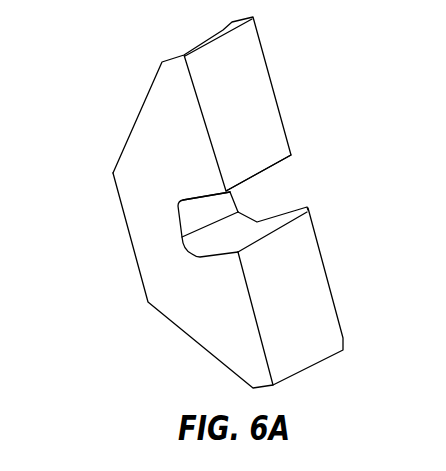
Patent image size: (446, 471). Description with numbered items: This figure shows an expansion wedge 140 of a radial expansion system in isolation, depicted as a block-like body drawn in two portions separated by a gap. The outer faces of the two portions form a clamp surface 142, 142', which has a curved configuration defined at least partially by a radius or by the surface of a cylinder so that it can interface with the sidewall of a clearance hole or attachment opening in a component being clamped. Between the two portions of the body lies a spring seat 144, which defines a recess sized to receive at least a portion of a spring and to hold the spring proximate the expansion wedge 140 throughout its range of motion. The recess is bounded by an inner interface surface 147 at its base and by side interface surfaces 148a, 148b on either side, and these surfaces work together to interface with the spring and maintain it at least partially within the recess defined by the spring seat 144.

The expansion wedge 140 is at (118, 31).
The clamp surface 142 is at (231, 104).
The clamp surface 142' is at (257, 280).
The spring seat 144 is at (290, 189).
The inner interface surface 147 is at (190, 225).
The side interface surface 148a is at (210, 202).
The side interface surface 148b is at (275, 225).